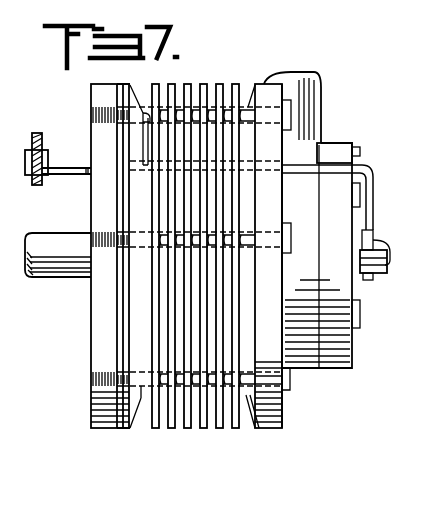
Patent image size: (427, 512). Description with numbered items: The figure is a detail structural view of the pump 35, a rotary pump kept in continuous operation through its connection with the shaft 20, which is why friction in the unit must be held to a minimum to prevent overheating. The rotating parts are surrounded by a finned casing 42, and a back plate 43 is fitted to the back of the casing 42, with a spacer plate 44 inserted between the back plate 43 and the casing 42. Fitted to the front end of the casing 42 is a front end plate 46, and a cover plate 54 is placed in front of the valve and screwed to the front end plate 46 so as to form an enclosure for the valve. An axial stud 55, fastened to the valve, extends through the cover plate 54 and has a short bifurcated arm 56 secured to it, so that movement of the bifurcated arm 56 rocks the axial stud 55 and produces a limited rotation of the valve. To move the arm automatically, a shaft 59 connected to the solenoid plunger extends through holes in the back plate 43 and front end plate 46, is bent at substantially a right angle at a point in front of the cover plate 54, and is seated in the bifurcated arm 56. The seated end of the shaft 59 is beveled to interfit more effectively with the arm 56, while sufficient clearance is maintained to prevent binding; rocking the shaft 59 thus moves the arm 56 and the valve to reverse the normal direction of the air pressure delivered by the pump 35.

The shaft 20 is at (58, 268).
The pump 35 is at (352, 83).
The finned casing 42 is at (188, 84).
The back plate 43 is at (102, 430).
The spacer plate 44 is at (117, 430).
The front end plate 46 is at (278, 90).
The cover plate 54 is at (336, 148).
The axial stud 55 is at (387, 255).
The bifurcated arm 56 is at (368, 280).
The shaft 59 is at (76, 158).